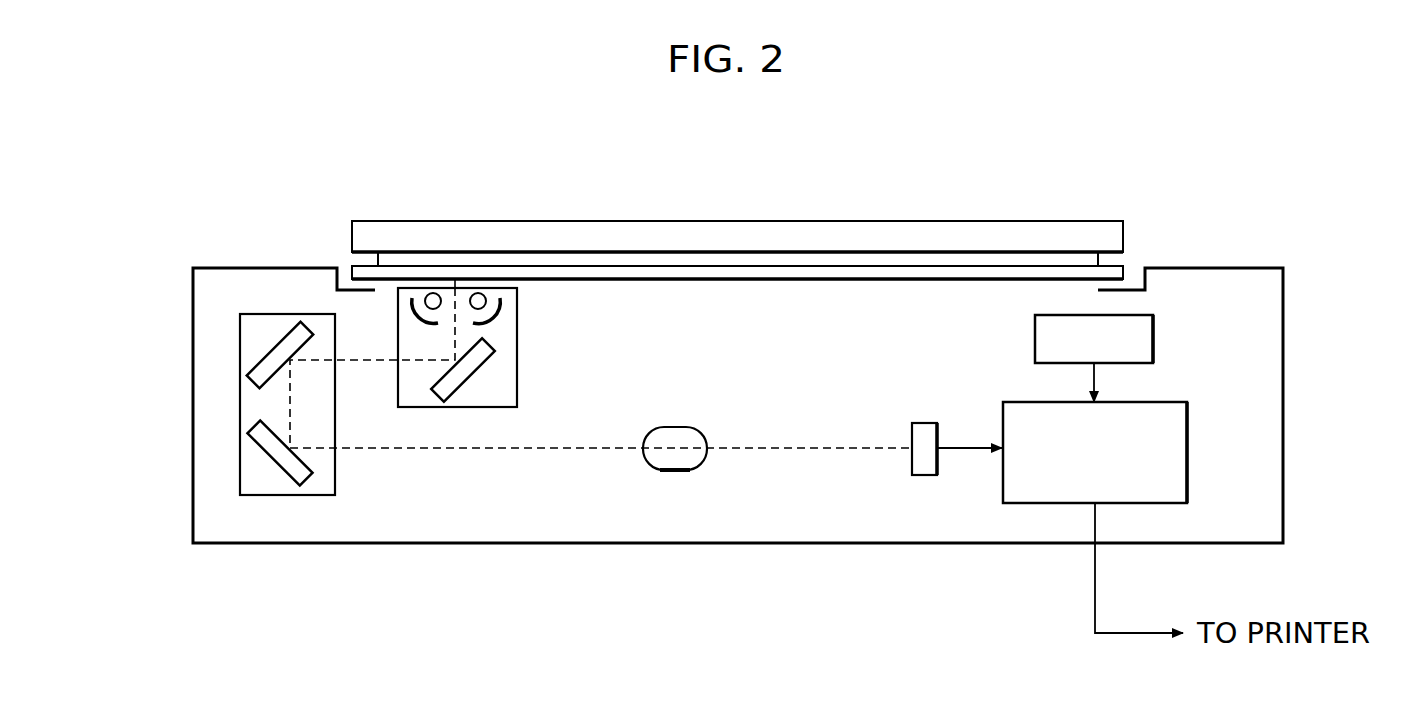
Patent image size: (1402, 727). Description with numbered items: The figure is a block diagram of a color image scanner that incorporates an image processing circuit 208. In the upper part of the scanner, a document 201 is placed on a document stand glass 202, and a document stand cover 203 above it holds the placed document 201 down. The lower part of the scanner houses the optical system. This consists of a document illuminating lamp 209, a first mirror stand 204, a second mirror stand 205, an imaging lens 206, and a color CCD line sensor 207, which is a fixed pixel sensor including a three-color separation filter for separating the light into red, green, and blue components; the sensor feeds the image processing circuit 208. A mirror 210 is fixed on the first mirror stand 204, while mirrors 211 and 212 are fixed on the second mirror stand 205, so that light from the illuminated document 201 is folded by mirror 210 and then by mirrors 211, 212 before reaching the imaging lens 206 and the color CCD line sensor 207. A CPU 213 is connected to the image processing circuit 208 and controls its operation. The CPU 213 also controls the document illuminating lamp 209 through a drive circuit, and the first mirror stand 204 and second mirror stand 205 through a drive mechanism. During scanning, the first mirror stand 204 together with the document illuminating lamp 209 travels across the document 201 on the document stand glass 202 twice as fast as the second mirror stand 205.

The document 201 is at (432, 263).
The document stand glass 202 is at (1125, 275).
The document stand cover 203 is at (1030, 222).
The first mirror stand 204 is at (527, 336).
The second mirror stand 205 is at (233, 405).
The imaging lens 206 is at (678, 427).
The color CCD line sensor 207 is at (925, 423).
The image processing circuit 208 is at (1187, 443).
The document illuminating lamp 209 is at (500, 312).
The mirror 210 is at (472, 368).
The mirror 211 is at (277, 345).
The mirror 212 is at (281, 472).
The CPU 213 is at (1157, 340).